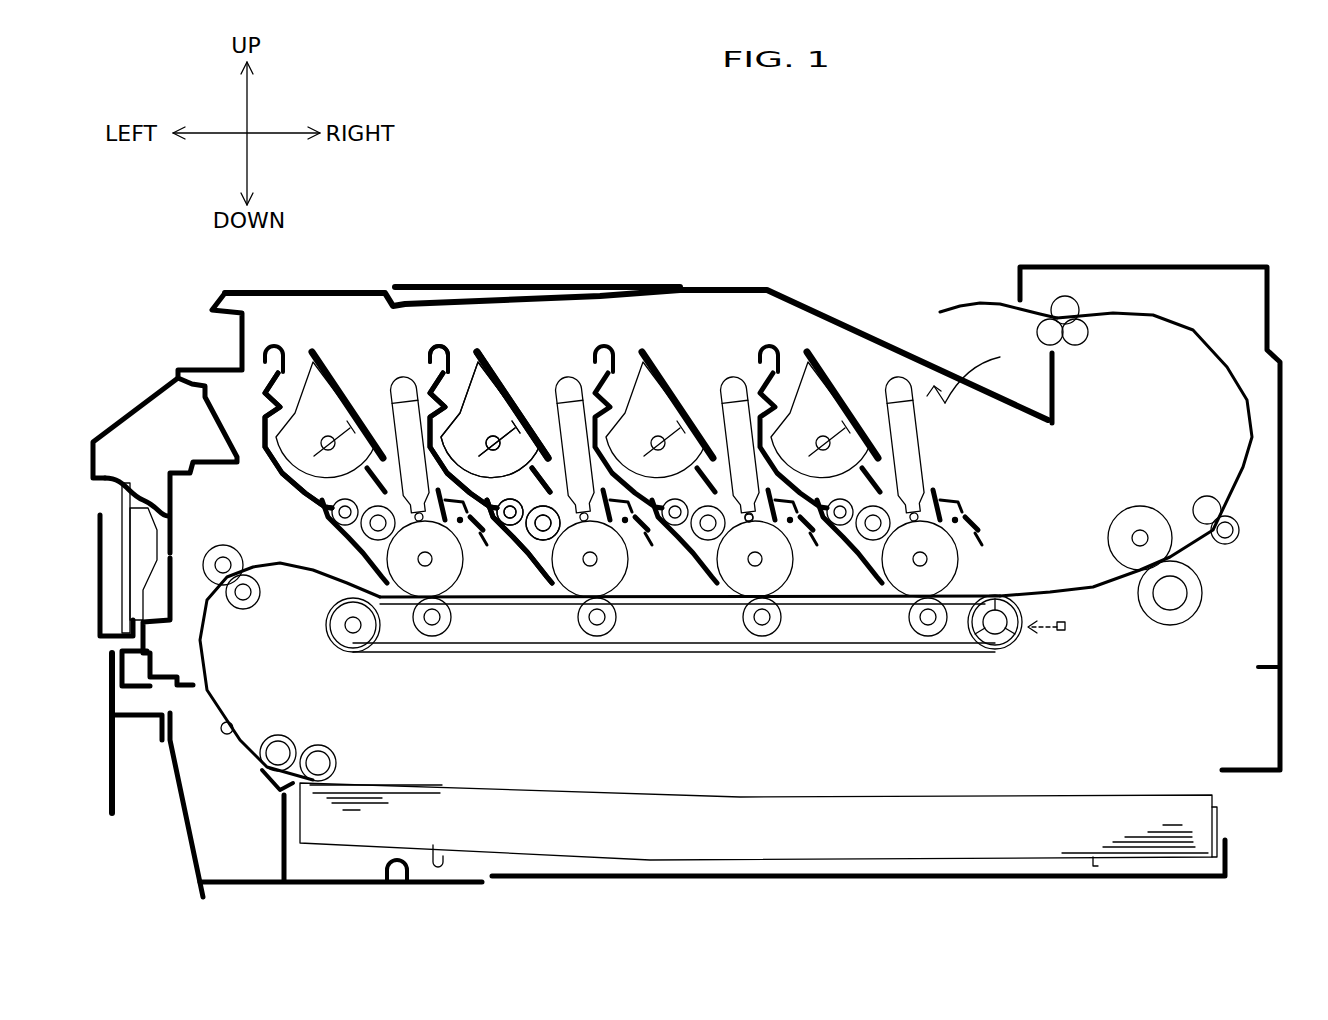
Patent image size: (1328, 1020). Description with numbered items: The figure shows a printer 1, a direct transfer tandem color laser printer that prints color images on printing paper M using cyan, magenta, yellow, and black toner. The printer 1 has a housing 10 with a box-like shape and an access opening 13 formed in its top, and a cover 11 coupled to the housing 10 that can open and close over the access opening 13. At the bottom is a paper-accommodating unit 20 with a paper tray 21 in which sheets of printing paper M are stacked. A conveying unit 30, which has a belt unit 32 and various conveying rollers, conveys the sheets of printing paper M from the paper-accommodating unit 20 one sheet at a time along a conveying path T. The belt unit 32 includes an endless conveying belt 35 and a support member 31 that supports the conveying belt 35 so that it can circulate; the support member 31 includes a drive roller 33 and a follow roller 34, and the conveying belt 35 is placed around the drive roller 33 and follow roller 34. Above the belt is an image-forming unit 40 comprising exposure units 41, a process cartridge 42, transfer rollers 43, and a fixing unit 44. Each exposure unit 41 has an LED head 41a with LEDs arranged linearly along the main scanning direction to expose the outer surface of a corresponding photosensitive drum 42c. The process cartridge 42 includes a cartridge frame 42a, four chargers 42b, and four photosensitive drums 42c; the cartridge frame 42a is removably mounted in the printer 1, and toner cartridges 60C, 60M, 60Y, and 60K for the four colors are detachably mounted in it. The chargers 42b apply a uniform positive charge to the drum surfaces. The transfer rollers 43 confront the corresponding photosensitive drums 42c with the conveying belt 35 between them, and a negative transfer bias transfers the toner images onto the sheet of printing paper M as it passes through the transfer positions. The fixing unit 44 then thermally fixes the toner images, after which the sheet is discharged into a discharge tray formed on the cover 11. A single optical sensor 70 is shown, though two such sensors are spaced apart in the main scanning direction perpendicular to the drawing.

The printer 1 is at (800, 210).
The housing 10 is at (1283, 385).
The cover 11 is at (770, 287).
The access opening 13 is at (979, 373).
The paper-accommodating unit 20 is at (1217, 827).
The paper tray 21 is at (433, 845).
The printing paper M is at (1128, 807).
The conveying path T is at (963, 307).
The conveying unit 30 is at (669, 660).
The support member 31 is at (687, 630).
The belt unit 32 is at (428, 662).
The drive roller 33 is at (368, 636).
The follow roller 34 is at (1007, 637).
The conveying belt 35 is at (960, 652).
The image-forming unit 40 is at (531, 355).
The exposure unit 41 is at (398, 370).
The LED head 41a is at (750, 522).
The process cartridge 42 is at (367, 352).
The cartridge frame 42a is at (262, 433).
The charger 42b is at (468, 533).
The photosensitive drum 42c is at (447, 567).
The transfer roller 43 is at (448, 620).
The fixing unit 44 is at (1195, 558).
The toner cartridge (black) 60K is at (331, 410).
The toner cartridge (yellow) 60Y is at (515, 370).
The toner cartridge (magenta) 60M is at (682, 370).
The toner cartridge (cyan) 60C is at (838, 370).
The optical sensor 70 is at (1067, 628).